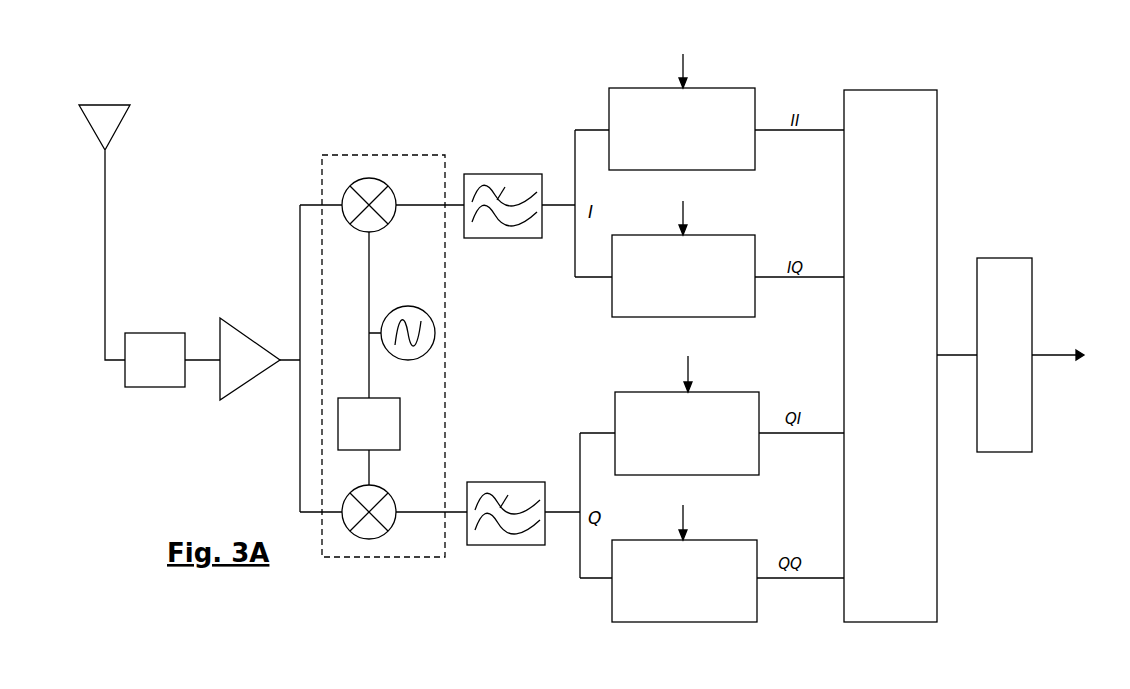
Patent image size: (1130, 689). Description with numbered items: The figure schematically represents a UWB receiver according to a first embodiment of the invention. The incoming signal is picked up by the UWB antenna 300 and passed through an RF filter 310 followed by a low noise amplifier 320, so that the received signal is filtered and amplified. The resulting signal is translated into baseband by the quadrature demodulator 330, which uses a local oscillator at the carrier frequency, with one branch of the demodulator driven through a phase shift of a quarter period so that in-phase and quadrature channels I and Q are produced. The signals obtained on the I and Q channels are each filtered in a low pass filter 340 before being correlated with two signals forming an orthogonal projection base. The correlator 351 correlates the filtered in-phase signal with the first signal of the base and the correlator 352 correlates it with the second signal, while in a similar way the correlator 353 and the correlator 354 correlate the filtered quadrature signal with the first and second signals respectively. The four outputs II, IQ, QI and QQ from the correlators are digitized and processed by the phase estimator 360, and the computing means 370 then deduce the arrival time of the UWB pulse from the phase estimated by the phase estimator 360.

The UWB antenna 300 is at (118, 103).
The RF filter 310 is at (148, 333).
The low noise amplifier 320 is at (247, 337).
The quadrature demodulator 330 is at (375, 155).
The low pass filter 340 is at (495, 174).
The correlator 351 is at (752, 88).
The correlator 352 is at (752, 235).
The correlator 353 is at (760, 392).
The correlator 354 is at (757, 540).
The phase estimator 360 is at (937, 92).
The computing means 370 is at (1008, 258).